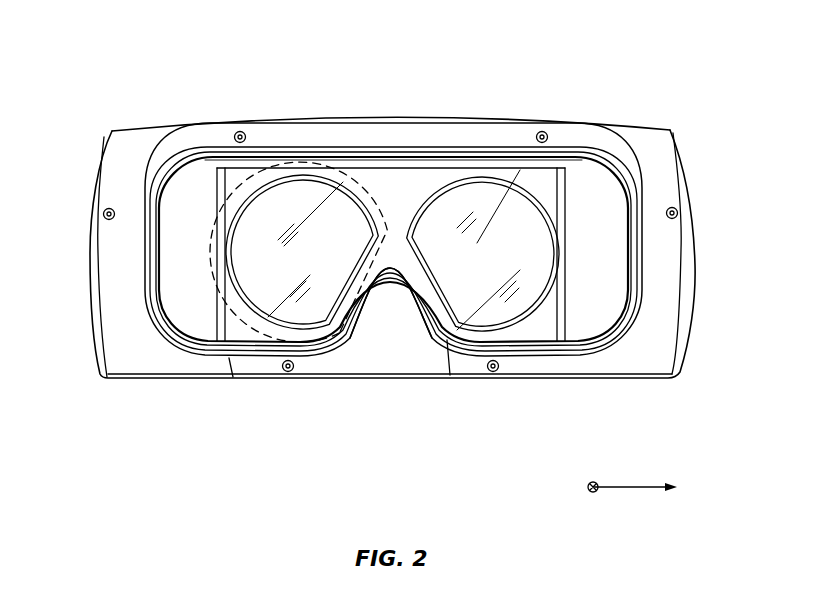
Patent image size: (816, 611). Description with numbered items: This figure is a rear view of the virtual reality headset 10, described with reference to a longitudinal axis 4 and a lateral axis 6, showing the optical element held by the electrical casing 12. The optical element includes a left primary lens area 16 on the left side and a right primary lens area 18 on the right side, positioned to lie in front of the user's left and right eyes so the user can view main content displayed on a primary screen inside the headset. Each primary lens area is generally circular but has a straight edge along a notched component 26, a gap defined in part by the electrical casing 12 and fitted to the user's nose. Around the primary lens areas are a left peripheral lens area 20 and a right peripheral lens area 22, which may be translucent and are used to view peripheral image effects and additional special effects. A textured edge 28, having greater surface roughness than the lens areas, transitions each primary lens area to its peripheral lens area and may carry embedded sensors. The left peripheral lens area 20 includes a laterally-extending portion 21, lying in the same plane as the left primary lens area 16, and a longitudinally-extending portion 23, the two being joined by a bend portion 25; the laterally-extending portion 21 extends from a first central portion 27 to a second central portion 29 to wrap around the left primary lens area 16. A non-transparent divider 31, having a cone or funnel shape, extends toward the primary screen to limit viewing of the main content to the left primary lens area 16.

The virtual reality headset 10 is at (391, 255).
The electrical casing 12 is at (693, 267).
The left primary lens area 16 is at (322, 152).
The right primary lens area 18 is at (483, 185).
The left peripheral lens area 20 is at (203, 378).
The laterally-extending portion 21 is at (307, 233).
The right peripheral lens area 22 is at (597, 237).
The longitudinally-extending portion 23 is at (190, 212).
The bend portion 25 is at (216, 176).
The notched component 26 is at (392, 330).
The first central portion 27 is at (380, 215).
The textured edge 28 is at (532, 198).
The second central portion 29 is at (312, 340).
The non-transparent divider 31 is at (210, 263).
The longitudinal axis 4 is at (589, 484).
The lateral axis 6 is at (614, 488).